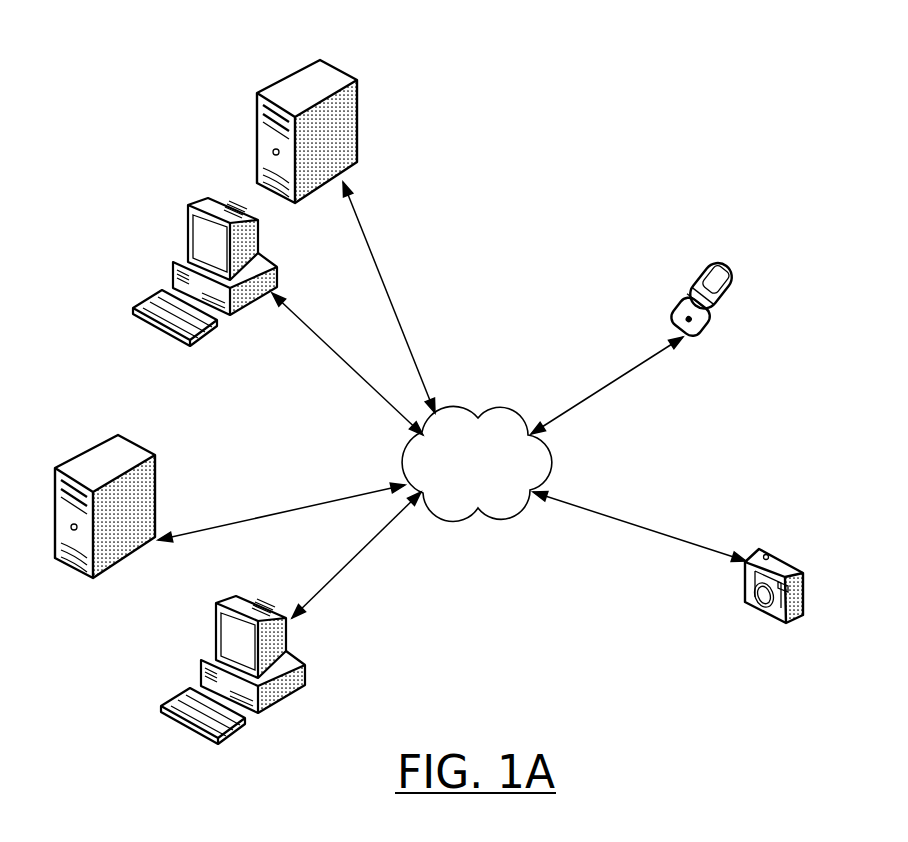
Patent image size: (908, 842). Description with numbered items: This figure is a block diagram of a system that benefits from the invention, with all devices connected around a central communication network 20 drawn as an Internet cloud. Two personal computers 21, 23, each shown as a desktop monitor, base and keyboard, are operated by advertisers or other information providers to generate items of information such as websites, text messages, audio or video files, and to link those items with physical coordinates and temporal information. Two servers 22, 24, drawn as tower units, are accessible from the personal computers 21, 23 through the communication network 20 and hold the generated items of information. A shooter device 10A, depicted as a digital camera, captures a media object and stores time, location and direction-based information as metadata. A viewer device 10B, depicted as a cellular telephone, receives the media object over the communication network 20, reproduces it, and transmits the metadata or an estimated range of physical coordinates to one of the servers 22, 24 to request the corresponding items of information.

The shooter device 10A is at (813, 583).
The viewer device 10B is at (741, 289).
The communication network 20 is at (449, 463).
The personal computer 21 is at (201, 258).
The server 22 is at (307, 113).
The personal computer 23 is at (233, 653).
The server 24 is at (105, 488).